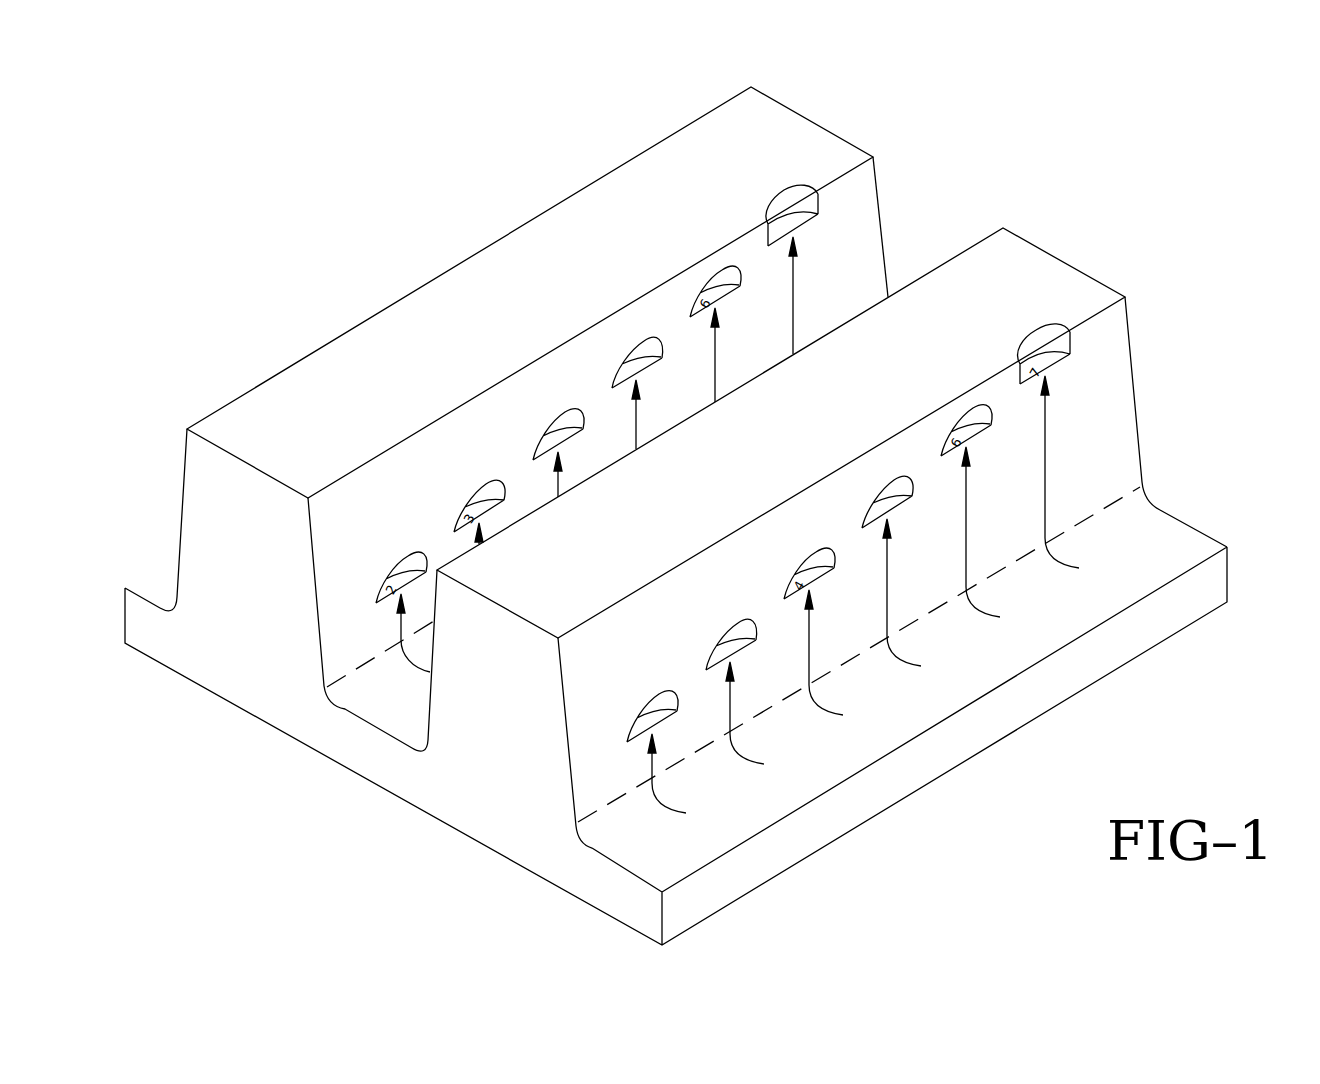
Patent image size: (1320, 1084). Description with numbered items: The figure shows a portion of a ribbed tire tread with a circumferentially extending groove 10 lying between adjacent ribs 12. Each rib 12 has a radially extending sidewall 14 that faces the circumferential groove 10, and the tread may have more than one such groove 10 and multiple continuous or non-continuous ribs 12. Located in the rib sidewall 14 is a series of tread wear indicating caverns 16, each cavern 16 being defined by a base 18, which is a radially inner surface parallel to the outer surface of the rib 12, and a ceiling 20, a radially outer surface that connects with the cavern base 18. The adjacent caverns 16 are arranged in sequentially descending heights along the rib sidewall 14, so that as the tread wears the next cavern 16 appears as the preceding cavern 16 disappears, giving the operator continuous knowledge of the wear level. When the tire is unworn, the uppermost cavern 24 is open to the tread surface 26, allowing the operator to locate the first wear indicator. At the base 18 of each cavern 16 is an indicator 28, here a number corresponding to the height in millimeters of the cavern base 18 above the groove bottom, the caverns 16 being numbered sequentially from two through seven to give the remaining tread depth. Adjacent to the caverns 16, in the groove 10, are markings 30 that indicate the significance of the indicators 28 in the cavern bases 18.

The circumferentially extending groove 10 is at (392, 705).
The rib 12 is at (272, 418).
The radially extending sidewall 14 is at (855, 242).
The tread wear indicating cavern 16 is at (412, 563).
The cavern base 18 is at (653, 358).
The ceiling 20 is at (552, 422).
The uppermost cavern 24 is at (785, 193).
The tread surface 26 is at (407, 362).
The indicator 28 is at (886, 497).
The markings 30 is at (663, 800).